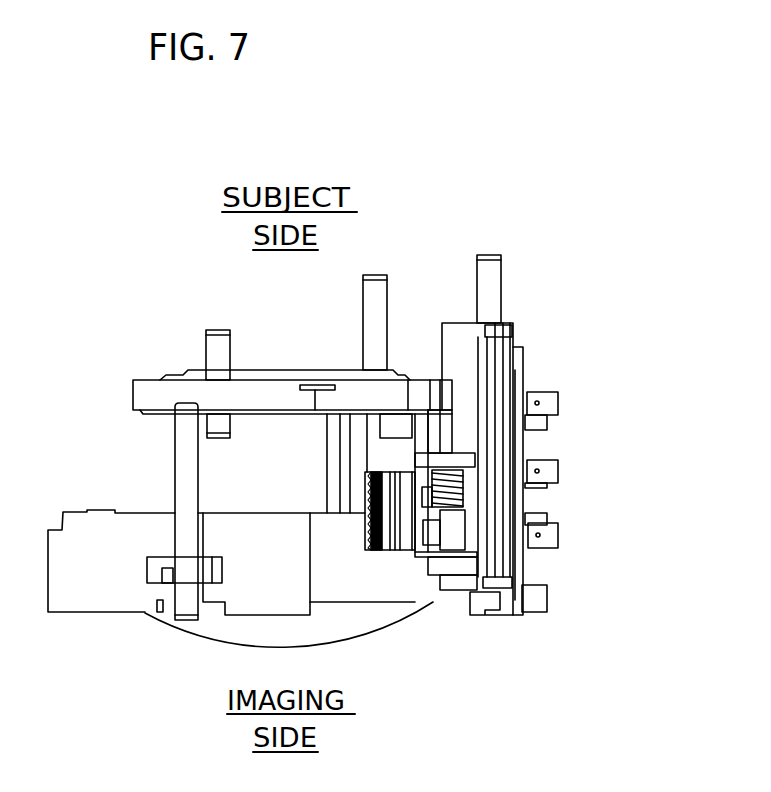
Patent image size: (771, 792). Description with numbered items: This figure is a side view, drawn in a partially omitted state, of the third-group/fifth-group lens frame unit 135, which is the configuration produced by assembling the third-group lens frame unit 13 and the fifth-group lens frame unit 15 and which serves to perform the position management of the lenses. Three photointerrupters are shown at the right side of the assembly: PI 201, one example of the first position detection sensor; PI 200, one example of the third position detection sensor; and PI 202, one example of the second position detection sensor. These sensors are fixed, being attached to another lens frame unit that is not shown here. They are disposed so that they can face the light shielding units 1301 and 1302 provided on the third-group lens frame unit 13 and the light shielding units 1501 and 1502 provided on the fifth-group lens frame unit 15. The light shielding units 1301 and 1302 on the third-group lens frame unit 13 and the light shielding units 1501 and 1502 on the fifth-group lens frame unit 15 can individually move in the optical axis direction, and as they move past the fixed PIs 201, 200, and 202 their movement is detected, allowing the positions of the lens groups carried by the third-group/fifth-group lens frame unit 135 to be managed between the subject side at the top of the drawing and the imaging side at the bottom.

The third-group lens frame unit 13 is at (163, 351).
The fifth-group lens frame unit 15 is at (52, 496).
The third-group/fifth-group lens frame unit 135 is at (558, 279).
The PI 200 is at (558, 472).
The PI 201 is at (558, 400).
The PI 202 is at (558, 540).
The light shielding unit 1301 is at (547, 425).
The light shielding unit 1302 is at (547, 485).
The light shielding unit 1501 is at (547, 600).
The light shielding unit 1502 is at (547, 519).